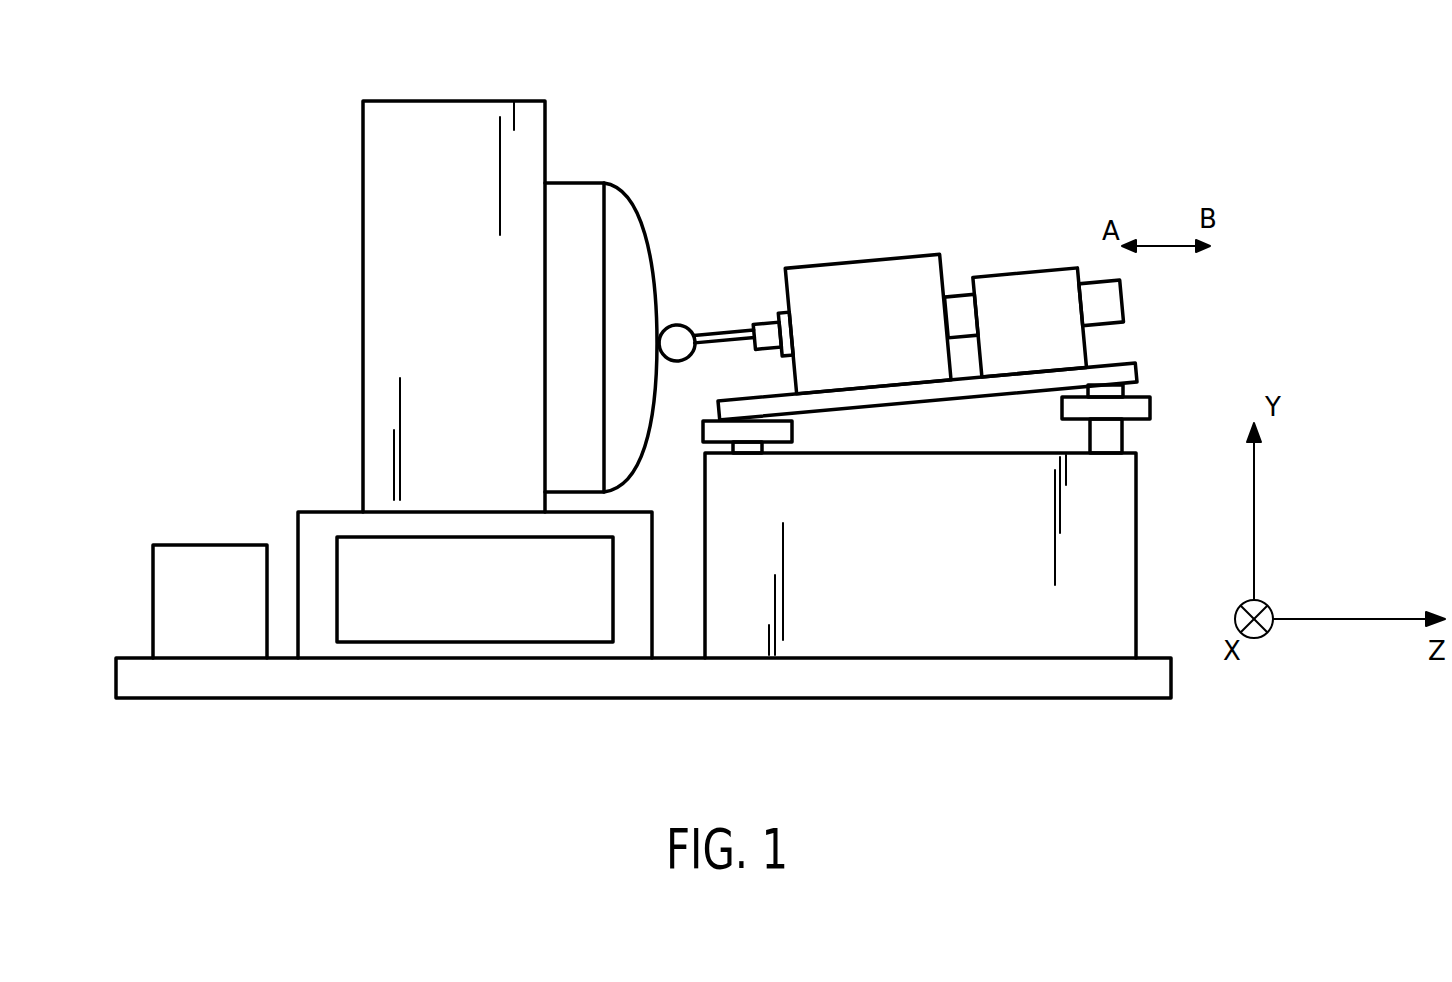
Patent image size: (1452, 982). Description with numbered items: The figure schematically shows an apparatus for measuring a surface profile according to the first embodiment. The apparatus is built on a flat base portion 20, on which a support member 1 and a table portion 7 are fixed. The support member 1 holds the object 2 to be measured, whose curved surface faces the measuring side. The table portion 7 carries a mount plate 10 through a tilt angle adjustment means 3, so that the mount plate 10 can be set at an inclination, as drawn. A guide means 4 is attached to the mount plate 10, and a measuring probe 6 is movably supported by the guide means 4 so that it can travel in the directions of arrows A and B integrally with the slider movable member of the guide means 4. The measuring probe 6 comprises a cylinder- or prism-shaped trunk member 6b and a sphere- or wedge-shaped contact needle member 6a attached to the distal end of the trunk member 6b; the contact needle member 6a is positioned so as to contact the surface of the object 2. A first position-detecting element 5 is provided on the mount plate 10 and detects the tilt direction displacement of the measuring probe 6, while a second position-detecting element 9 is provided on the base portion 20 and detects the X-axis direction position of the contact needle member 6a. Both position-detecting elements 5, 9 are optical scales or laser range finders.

The support member 1 is at (450, 112).
The object to be measured 2 is at (622, 206).
The tilt angle adjustment means 3 is at (1159, 401).
The guide means 4 is at (881, 268).
The first position-detecting element 5 is at (1034, 285).
The measuring probe 6 is at (719, 271).
The contact needle member 6a is at (677, 325).
The trunk member 6b is at (727, 272).
The table portion 7 is at (920, 645).
The second position-detecting element 9 is at (216, 556).
The mount plate 10 is at (978, 390).
The base portion 20 is at (748, 686).